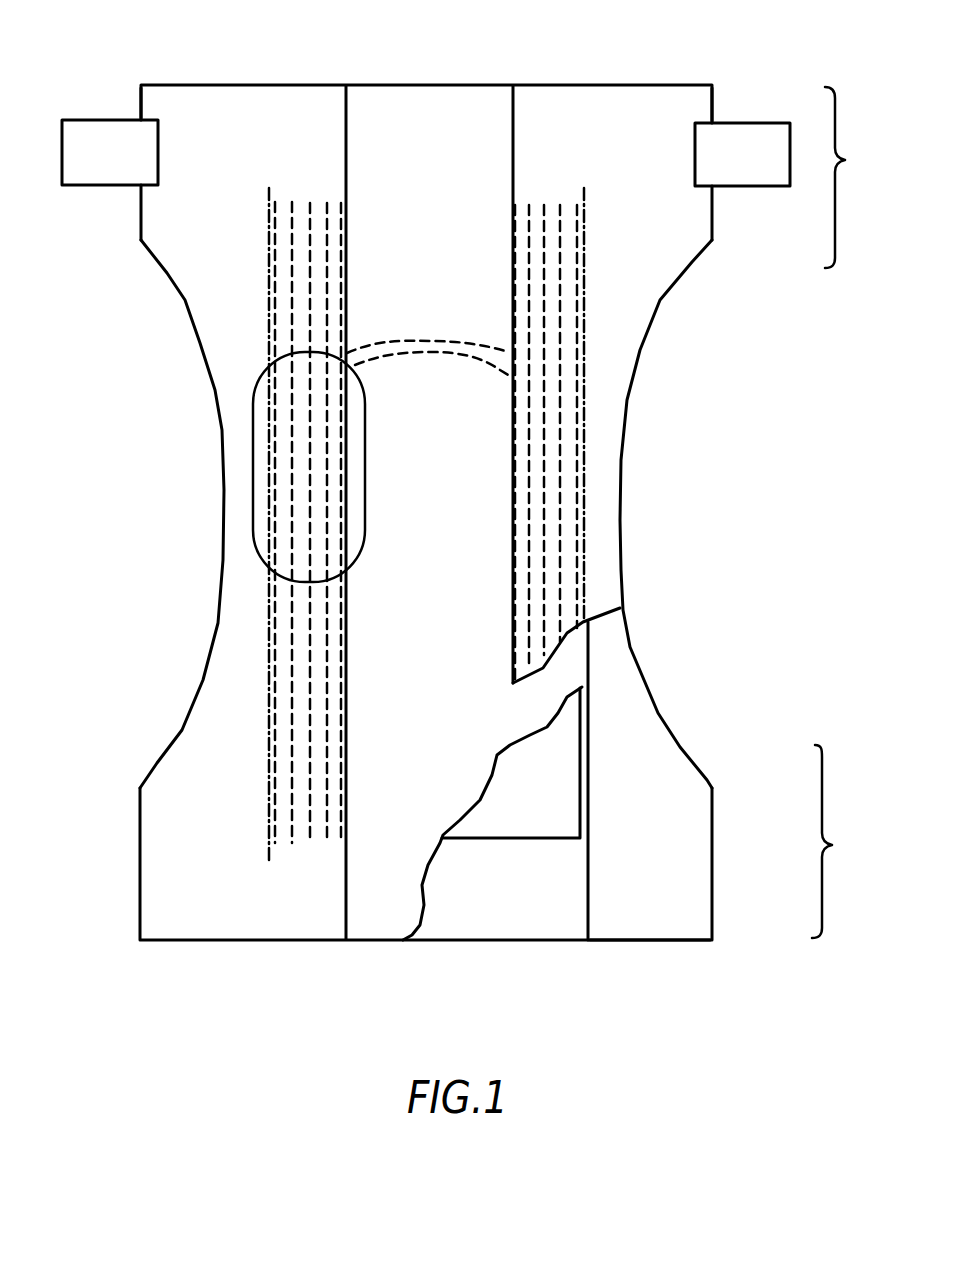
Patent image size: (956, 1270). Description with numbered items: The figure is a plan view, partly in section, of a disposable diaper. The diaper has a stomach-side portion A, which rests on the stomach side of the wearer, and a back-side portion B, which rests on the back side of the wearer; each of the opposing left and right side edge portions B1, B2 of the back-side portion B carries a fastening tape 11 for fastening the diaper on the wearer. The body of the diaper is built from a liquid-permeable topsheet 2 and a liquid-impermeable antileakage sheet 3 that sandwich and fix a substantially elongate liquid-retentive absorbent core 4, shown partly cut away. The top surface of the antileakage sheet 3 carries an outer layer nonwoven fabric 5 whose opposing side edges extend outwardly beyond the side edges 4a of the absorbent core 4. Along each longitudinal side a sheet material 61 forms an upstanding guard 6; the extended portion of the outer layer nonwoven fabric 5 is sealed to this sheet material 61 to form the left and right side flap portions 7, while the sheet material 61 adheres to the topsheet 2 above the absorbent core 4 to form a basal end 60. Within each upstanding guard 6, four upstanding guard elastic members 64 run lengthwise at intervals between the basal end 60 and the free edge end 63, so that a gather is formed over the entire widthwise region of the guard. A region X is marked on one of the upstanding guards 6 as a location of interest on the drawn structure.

The liquid-permeable topsheet 2 is at (568, 668).
The liquid-impermeable antileakage sheet 3 is at (587, 735).
The liquid-retentive absorbent core 4 is at (493, 825).
The side edges of the absorbent core 4a is at (588, 807).
The outer layer nonwoven fabric 5 is at (678, 822).
The upstanding guard 6 is at (520, 217).
The side flap portions 7 is at (217, 340).
The fastening tape 11 is at (80, 133).
The basal end 60 is at (270, 268).
The sheet material for forming the upstanding guard 61 is at (540, 317).
The free edge end 63 is at (517, 273).
The upstanding guard elastic members 64 is at (428, 352).
The region X is at (257, 513).
The stomach-side portion A is at (833, 841).
The back-side portion B is at (848, 177).
The side edge portion of the back-side portion B1 is at (713, 98).
The side edge portion of the back-side portion B2 is at (141, 100).